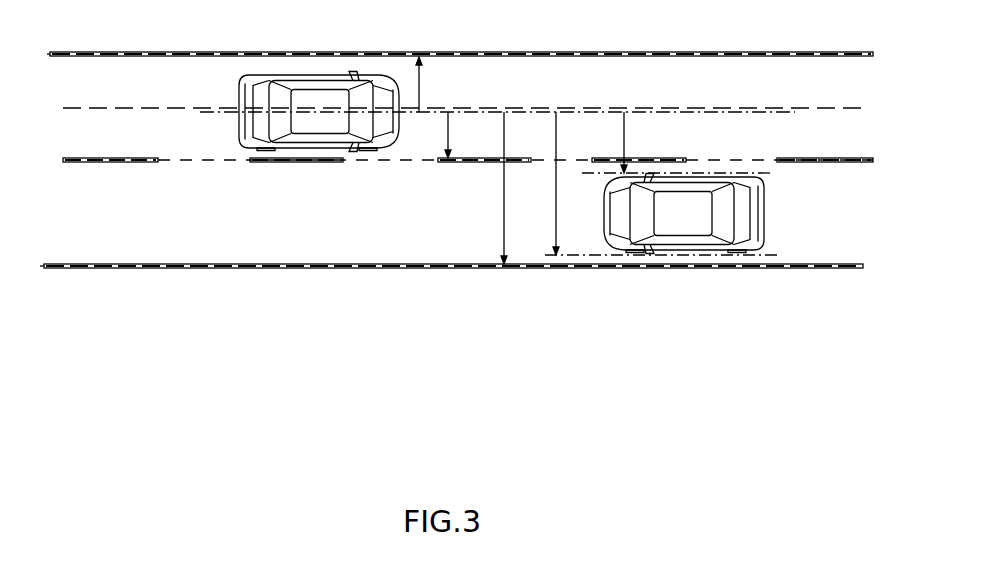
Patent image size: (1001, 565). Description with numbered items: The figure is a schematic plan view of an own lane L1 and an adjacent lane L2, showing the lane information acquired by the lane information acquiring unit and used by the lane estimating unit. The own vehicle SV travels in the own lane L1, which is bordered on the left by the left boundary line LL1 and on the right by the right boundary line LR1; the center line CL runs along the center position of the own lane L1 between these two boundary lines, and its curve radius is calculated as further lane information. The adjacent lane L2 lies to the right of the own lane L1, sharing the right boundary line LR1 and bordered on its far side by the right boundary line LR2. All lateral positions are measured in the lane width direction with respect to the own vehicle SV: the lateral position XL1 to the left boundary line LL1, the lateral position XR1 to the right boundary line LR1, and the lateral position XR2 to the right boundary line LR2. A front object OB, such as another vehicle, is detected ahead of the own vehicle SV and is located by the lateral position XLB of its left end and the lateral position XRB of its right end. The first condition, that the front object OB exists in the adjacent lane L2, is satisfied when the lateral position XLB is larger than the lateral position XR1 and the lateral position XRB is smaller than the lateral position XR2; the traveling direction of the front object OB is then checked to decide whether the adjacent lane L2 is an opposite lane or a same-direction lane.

The own vehicle SV is at (302, 72).
The front object OB is at (690, 252).
The left boundary line of own lane LL1 is at (879, 54).
The center line CL is at (827, 108).
The right boundary line of own lane LR1 is at (879, 160).
The right boundary line of adjacent lane LR2 is at (871, 267).
The own lane L1 is at (32, 116).
The adjacent lane L2 is at (32, 223).
The lateral position of left boundary line of own lane XL1 is at (437, 84).
The lateral position of right boundary line of own lane XR1 is at (463, 135).
The lateral position of right boundary line of adjacent lane XR2 is at (520, 188).
The lateral position of right end of front object XRB is at (574, 183).
The lateral position of left end of front object XLB is at (641, 142).